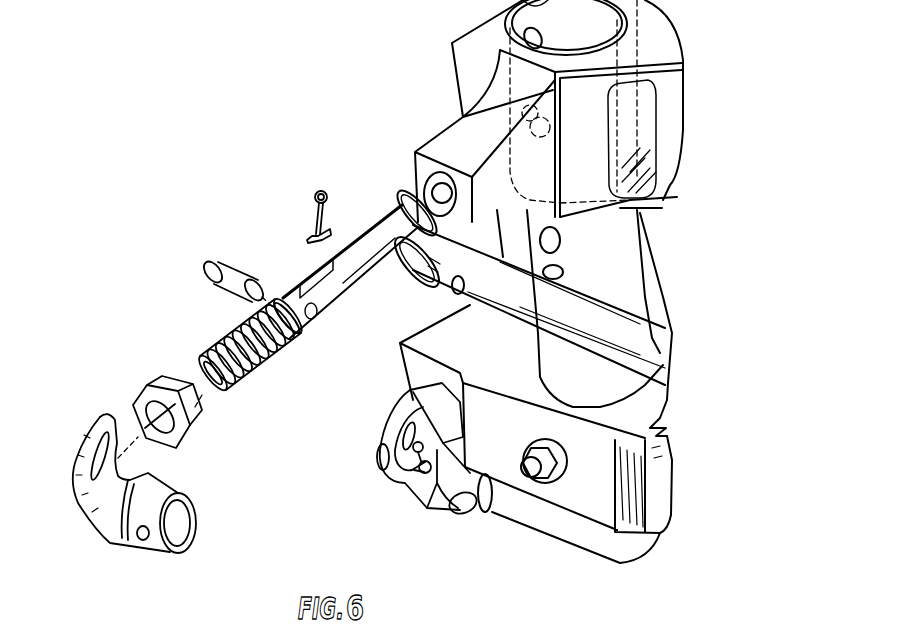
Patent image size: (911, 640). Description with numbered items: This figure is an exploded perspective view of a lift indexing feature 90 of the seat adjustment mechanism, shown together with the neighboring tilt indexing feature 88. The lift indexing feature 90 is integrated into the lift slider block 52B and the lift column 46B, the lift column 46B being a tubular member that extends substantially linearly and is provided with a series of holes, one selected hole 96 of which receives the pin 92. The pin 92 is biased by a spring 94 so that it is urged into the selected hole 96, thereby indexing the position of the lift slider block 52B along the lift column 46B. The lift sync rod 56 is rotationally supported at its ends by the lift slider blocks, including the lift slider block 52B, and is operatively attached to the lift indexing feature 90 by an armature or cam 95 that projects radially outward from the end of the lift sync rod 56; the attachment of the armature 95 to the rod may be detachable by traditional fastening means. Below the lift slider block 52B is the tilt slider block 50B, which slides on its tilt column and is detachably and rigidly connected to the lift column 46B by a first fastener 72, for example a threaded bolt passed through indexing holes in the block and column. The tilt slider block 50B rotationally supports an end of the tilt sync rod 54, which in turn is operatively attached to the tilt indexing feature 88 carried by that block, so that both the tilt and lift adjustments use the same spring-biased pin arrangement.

The lift column 46B is at (622, 232).
The lift slider block 52B is at (665, 178).
The pin 92 is at (372, 245).
The hole 96 is at (620, 270).
The lift sync rod 56 is at (652, 340).
The tilt slider block 50B is at (640, 413).
The first fastener 72 is at (562, 470).
The tilt sync rod 54 is at (538, 523).
The tilt indexing feature 88 is at (347, 485).
The spring 94 is at (217, 347).
The armature or cam 95 is at (82, 508).
The lift indexing feature 90 is at (184, 221).